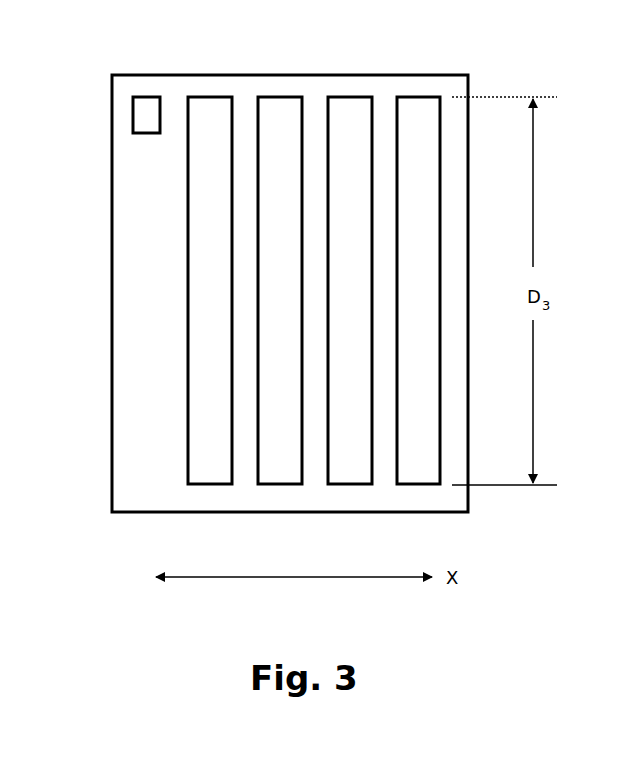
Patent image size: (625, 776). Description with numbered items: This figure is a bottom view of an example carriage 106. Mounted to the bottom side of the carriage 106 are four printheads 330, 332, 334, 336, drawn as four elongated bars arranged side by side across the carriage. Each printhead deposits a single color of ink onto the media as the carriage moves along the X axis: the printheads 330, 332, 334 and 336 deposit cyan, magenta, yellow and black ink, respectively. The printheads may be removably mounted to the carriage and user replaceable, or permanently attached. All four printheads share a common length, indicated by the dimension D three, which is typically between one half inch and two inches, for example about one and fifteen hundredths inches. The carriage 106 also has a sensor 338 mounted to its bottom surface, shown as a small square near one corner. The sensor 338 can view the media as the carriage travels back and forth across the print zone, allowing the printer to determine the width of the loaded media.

The carriage 106 is at (468, 96).
The sensor 338 is at (133, 118).
The printhead 330 is at (193, 486).
The printhead 332 is at (273, 486).
The printhead 334 is at (340, 486).
The printhead 336 is at (413, 486).